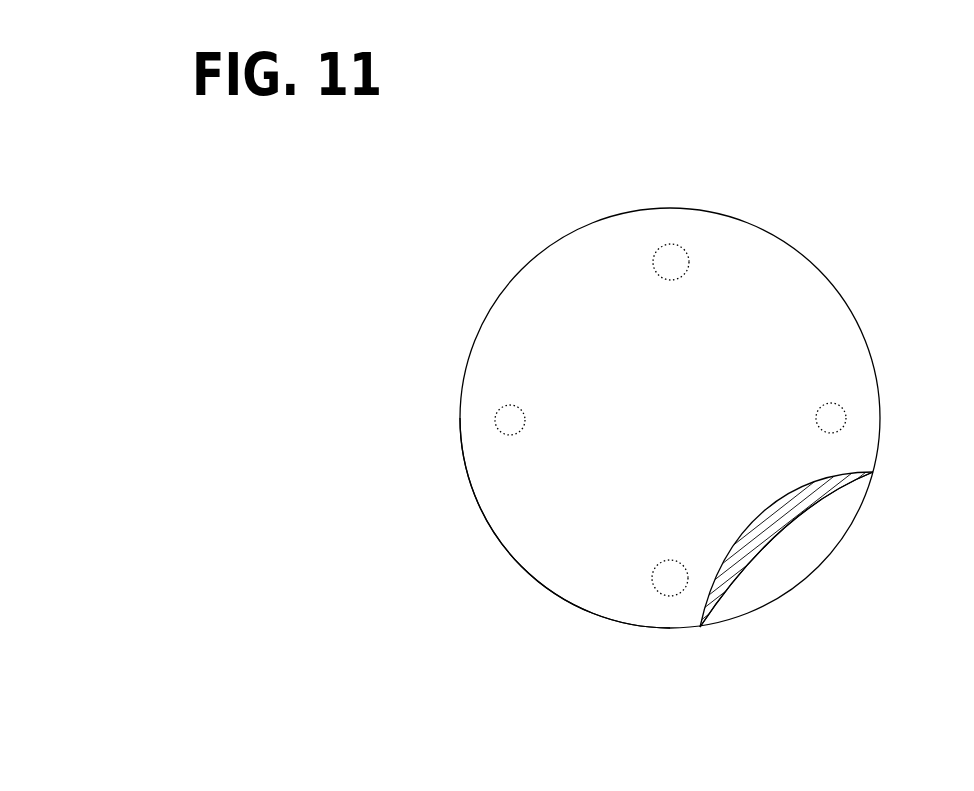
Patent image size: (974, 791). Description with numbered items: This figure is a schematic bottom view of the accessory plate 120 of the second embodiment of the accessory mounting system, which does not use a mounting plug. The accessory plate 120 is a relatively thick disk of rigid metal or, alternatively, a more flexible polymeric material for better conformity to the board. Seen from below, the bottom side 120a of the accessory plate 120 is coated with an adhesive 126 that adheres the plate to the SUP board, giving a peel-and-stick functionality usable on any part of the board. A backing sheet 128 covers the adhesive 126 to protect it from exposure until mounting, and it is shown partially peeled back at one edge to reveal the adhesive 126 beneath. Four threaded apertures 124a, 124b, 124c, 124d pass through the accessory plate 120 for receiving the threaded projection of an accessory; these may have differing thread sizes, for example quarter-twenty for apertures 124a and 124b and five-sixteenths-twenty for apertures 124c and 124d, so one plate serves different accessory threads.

The accessory plate 120 is at (527, 278).
The bottom side 120a is at (788, 578).
The threaded aperture 124a is at (498, 422).
The threaded aperture 124b is at (827, 417).
The threaded aperture 124c is at (665, 258).
The threaded aperture 124d is at (665, 577).
The adhesive 126 is at (819, 550).
The backing sheet 128 is at (527, 560).